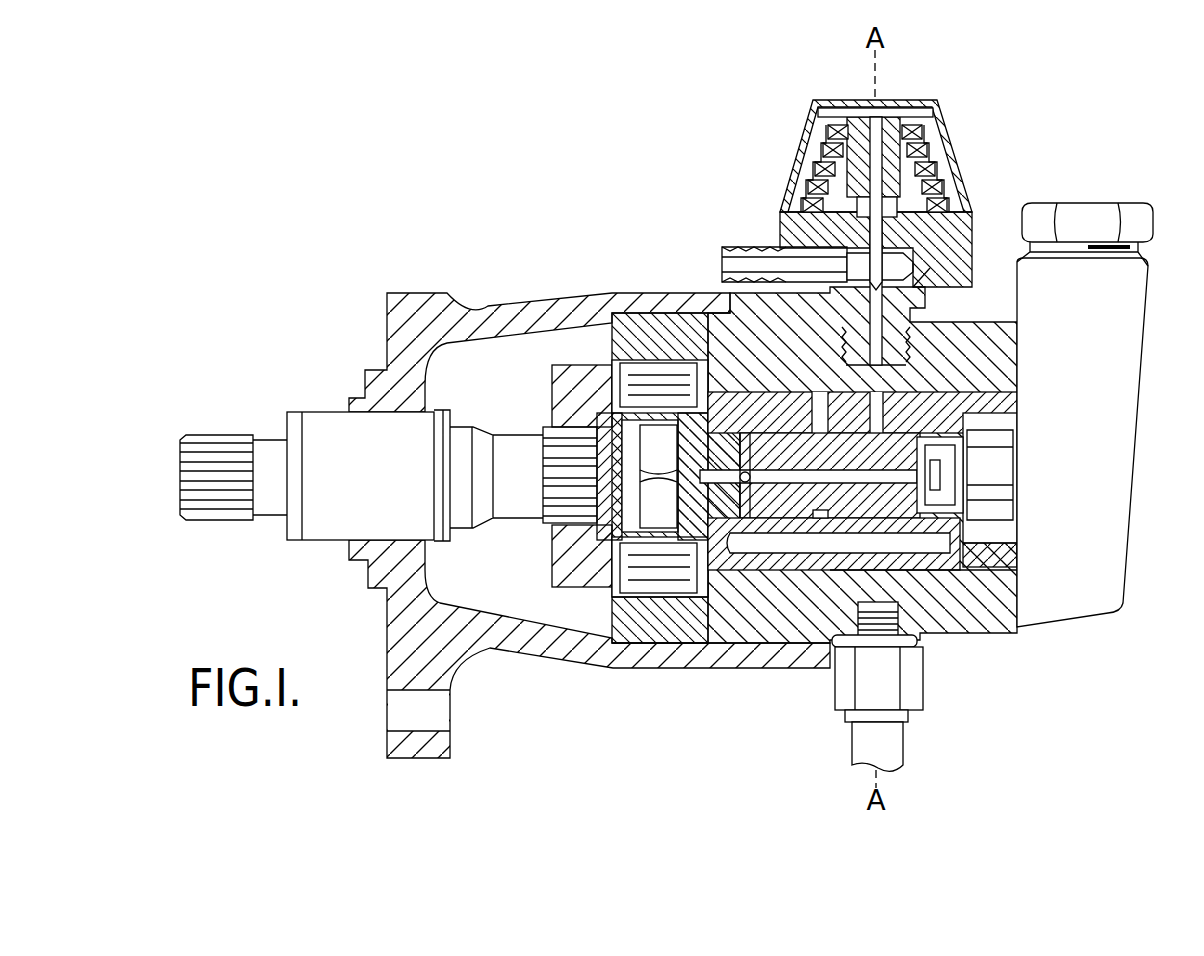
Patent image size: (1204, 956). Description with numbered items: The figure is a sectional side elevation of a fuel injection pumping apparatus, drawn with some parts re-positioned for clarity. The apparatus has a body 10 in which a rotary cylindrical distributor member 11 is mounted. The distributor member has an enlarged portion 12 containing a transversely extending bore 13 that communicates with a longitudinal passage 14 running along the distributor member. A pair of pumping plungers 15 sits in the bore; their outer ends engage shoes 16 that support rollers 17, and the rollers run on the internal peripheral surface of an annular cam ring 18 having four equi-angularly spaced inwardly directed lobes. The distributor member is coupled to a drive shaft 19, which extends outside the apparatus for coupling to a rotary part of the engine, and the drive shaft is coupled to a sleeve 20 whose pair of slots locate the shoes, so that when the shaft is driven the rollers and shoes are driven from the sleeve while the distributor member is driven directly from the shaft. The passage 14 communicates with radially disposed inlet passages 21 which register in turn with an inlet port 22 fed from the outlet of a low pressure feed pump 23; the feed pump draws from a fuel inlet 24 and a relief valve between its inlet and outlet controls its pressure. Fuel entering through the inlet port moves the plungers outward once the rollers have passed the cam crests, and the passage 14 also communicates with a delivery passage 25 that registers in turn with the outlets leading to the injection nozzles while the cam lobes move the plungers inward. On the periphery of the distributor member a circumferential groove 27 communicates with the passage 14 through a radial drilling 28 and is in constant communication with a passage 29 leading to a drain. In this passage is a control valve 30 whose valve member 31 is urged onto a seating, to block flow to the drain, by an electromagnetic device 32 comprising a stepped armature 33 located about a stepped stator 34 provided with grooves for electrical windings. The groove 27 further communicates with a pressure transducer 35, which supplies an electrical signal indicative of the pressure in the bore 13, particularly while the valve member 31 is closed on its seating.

The body 10 is at (945, 352).
The rotary cylindrical distributor member 11 is at (768, 457).
The enlarged portion 12 is at (622, 502).
The transversely extending bore 13 is at (680, 433).
The longitudinal passage 14 is at (710, 480).
The pumping plungers 15 is at (630, 500).
The shoes 16 is at (652, 405).
The rollers 17 is at (630, 380).
The annular cam ring 18 is at (700, 597).
The drive shaft 19 is at (498, 505).
The sleeve 20 is at (586, 388).
The inlet passages 21 is at (737, 520).
The inlet port 22 is at (747, 525).
The low pressure feed pump 23 is at (1036, 520).
The fuel inlet 24 is at (1136, 197).
The delivery passage 25 is at (963, 428).
The circumferential groove 27 is at (822, 513).
The radial drilling 28 is at (880, 478).
The passage 29 is at (820, 388).
The control valve 30 is at (978, 208).
The valve member 31 is at (877, 240).
The electromagnetic device 32 is at (788, 152).
The stepped armature 33 is at (822, 148).
The stepped stator 34 is at (856, 130).
The pressure transducer 35 is at (930, 684).